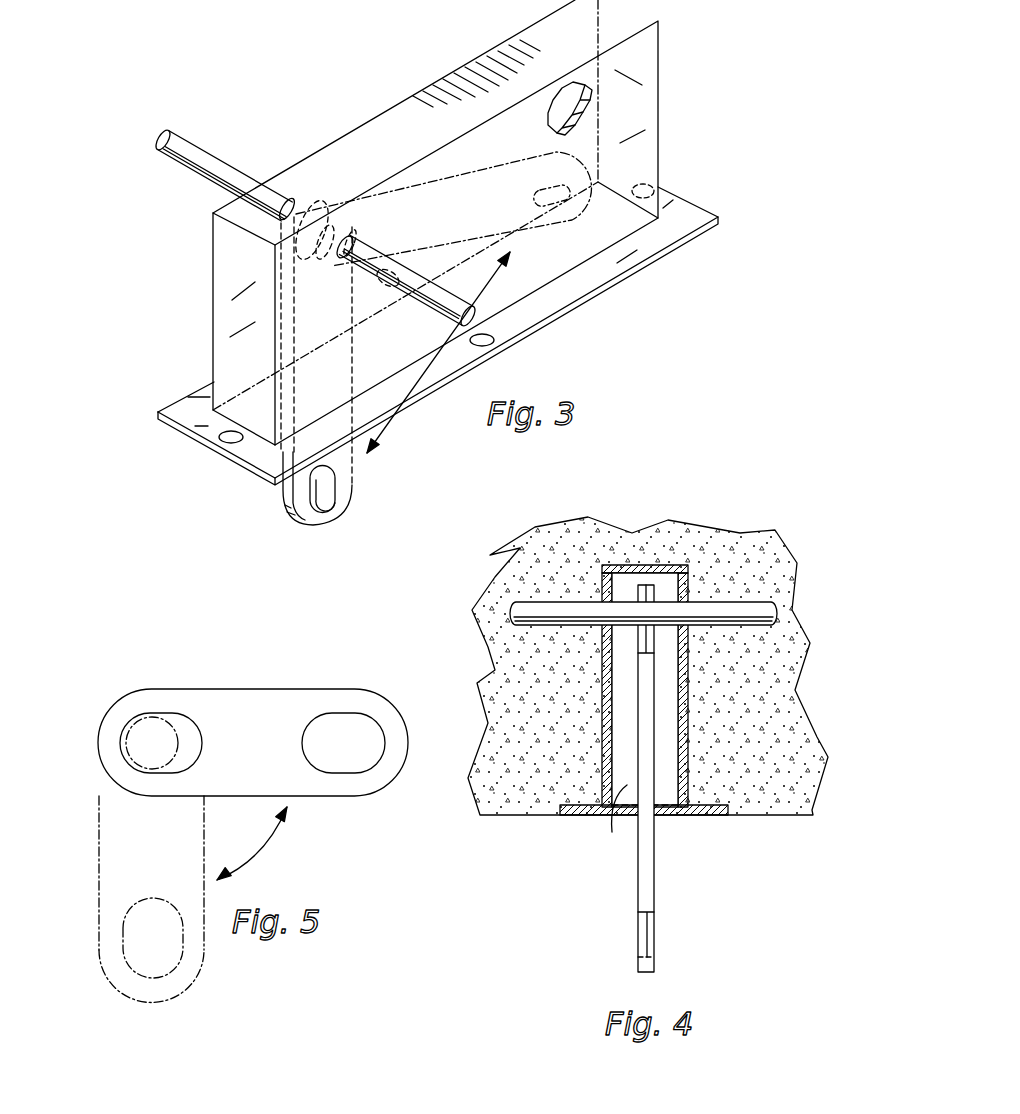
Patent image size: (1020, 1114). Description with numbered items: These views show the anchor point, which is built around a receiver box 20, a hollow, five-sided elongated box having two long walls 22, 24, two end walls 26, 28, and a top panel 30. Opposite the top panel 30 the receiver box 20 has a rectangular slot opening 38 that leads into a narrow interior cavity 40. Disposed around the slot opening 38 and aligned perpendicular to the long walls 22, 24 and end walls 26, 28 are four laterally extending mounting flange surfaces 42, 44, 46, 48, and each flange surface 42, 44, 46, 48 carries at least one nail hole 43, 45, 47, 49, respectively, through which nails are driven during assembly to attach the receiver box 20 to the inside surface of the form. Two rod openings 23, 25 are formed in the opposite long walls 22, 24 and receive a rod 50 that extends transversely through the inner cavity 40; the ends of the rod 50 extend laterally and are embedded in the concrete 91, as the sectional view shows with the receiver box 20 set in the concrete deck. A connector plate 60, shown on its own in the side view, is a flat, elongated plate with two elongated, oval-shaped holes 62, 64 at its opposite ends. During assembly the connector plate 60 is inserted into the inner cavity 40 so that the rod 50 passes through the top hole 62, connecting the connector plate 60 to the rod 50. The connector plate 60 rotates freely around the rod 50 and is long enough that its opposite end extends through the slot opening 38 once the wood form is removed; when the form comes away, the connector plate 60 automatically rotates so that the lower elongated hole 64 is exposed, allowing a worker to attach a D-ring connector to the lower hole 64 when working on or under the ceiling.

In FIG. 3, the receiver box 20 is at (478, 49).
In FIG. 4, the receiver box 20 is at (680, 556).
In FIG. 3, the long wall 22 is at (640, 136).
In FIG. 3, the rod opening 23 is at (338, 252).
In FIG. 3, the long wall 24 is at (250, 286).
In FIG. 3, the rod opening 25 is at (283, 204).
In FIG. 3, the end wall 26 is at (242, 330).
In FIG. 3, the end wall 28 is at (628, 78).
In FIG. 3, the top panel 30 is at (415, 108).
In FIG. 3, the slot opening 38 is at (543, 258).
In FIG. 4, the slot opening 38 is at (601, 822).
In FIG. 3, the interior cavity 40 is at (578, 98).
In FIG. 3, the mounting flange surface 42 is at (627, 257).
In FIG. 4, the mounting flange surface 42 is at (644, 810).
In FIG. 3, the nail hole 43 is at (492, 342).
In FIG. 3, the mounting flange surface 44 is at (208, 396).
In FIG. 3, the nail hole 45 is at (391, 266).
In FIG. 3, the mounting flange surface 46 is at (208, 425).
In FIG. 3, the nail hole 47 is at (231, 437).
In FIG. 3, the mounting flange surface 48 is at (668, 204).
In FIG. 3, the nail hole 49 is at (652, 188).
In FIG. 3, the rod 50 is at (188, 168).
In FIG. 4, the rod 50 is at (543, 607).
In FIG. 5, the rod 50 is at (131, 757).
In FIG. 3, the connector plate 60 is at (316, 371).
In FIG. 4, the connector plate 60 is at (649, 880).
In FIG. 5, the connector plate 60 is at (110, 689).
In FIG. 4, the top hole 62 is at (648, 640).
In FIG. 5, the top hole 62 is at (188, 715).
In FIG. 3, the lower elongated hole 64 is at (322, 488).
In FIG. 4, the lower elongated hole 64 is at (647, 913).
In FIG. 5, the lower elongated hole 64 is at (318, 715).
In FIG. 4, the concrete 91 is at (753, 547).